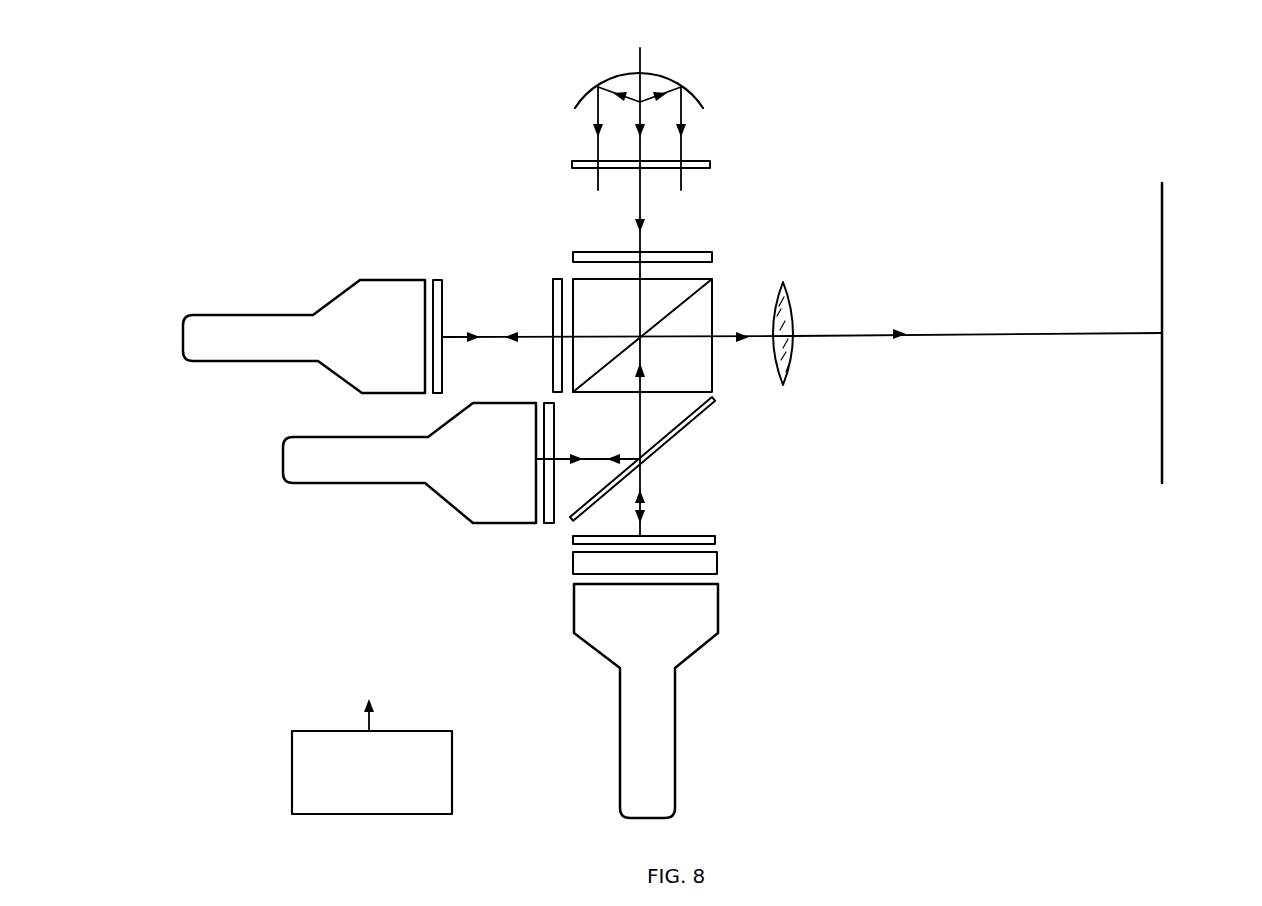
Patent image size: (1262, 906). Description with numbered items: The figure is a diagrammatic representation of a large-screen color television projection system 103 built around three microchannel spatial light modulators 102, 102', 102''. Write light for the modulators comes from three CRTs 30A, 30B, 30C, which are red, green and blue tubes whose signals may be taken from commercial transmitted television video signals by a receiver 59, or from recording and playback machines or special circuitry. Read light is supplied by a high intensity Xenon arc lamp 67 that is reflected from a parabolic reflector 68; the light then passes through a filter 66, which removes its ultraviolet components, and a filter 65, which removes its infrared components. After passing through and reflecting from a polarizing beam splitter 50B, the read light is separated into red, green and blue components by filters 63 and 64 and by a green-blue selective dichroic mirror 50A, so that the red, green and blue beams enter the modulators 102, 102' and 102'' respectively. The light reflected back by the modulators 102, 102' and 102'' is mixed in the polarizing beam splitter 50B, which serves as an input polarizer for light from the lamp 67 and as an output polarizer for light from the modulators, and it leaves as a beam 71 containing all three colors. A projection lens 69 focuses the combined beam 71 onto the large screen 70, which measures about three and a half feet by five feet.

The system 103 is at (797, 343).
The parabolic reflector 68 is at (670, 75).
The Xenon arc lamp 67 is at (676, 138).
The filter 66 is at (685, 159).
The filter 65 is at (698, 235).
The polarizing beam splitter 50B is at (618, 352).
The filter 63 is at (528, 335).
The microchannel spatial light modulator 102 is at (420, 310).
The CRT 30A is at (304, 323).
The CRT 30B is at (409, 477).
The microchannel spatial light modulator 102' is at (580, 463).
The green-blue selective dichroic mirror 50A is at (687, 459).
The filter 64 is at (687, 529).
The microchannel spatial light modulator 102'' is at (692, 565).
The CRT 30C is at (666, 701).
The projection lens 69 is at (814, 317).
The beam 71 is at (757, 308).
The large screen 70 is at (1192, 333).
The receiver 59 is at (400, 749).